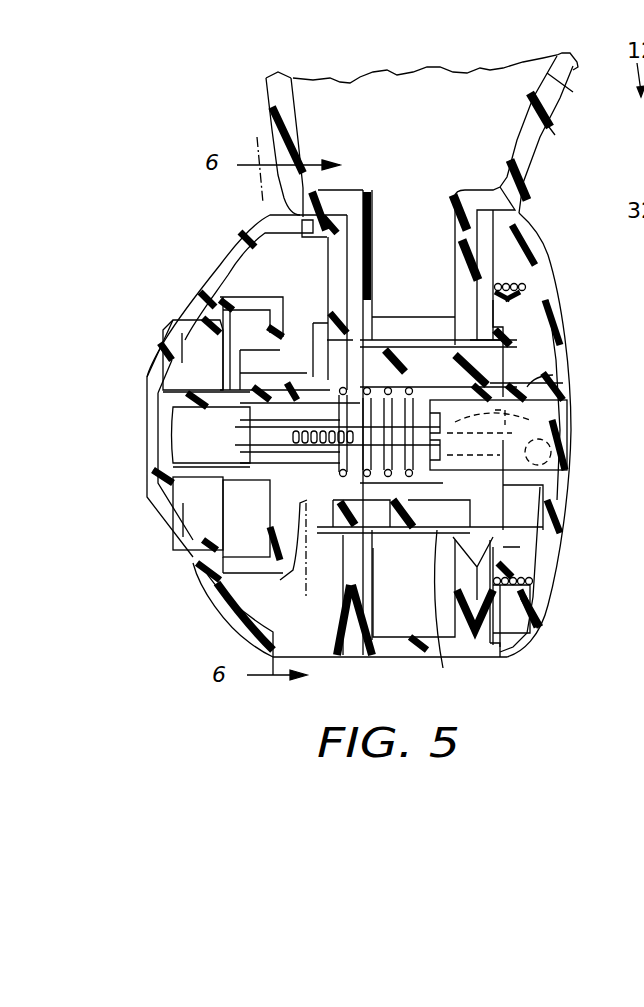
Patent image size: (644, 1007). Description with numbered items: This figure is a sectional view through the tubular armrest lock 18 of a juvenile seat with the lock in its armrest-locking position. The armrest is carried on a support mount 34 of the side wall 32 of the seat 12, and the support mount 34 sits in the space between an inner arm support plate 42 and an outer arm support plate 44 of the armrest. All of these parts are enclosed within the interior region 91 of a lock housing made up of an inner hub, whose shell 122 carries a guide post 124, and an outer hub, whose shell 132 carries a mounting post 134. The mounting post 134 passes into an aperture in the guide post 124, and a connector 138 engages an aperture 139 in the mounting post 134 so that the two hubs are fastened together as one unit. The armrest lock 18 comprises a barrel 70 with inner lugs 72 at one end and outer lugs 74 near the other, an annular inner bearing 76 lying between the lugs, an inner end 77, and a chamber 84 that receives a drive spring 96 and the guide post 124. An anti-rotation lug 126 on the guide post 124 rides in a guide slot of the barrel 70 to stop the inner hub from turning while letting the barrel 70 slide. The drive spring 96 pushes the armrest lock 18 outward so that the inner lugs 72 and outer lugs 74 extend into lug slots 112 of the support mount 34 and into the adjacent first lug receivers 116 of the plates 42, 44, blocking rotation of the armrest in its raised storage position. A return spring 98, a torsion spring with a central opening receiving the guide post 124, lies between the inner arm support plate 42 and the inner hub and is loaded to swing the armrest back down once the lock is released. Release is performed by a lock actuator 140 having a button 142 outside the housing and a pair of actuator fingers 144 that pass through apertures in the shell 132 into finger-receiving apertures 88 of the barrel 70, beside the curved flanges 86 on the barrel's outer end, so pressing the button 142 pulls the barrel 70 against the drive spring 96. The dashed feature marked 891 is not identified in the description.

The seat 12 is at (565, 90).
The side wall 32 is at (268, 103).
The support mount 34 is at (460, 262).
The inner arm support plate 42 is at (487, 258).
The outer arm support plate 44 is at (375, 232).
The barrel 70 is at (432, 373).
The inner lugs 72 is at (503, 347).
The outer lugs 74 is at (420, 347).
The annular inner bearing 76 is at (422, 537).
The inner end of barrel 77 is at (543, 502).
The chamber 84 is at (437, 595).
The axially extending curved flanges 86 is at (297, 477).
The finger-receiving apertures 88 is at (280, 580).
The interior region 91 is at (257, 278).
The drive spring 96 is at (333, 400).
The return spring 98 is at (507, 273).
The lug slots 112 is at (418, 347).
The first lug receivers 116 is at (503, 327).
The shell 122 is at (569, 358).
The guide post 124 is at (553, 375).
The anti-rotation lug 126 is at (568, 455).
The shell 132 is at (217, 603).
The mounting post 134 is at (220, 487).
The connector 138 is at (440, 455).
The aperture 139 is at (247, 433).
The lock actuator 140 is at (123, 443).
The button 142 is at (153, 360).
The actuator fingers 144 is at (187, 407).
The coil 891 is at (507, 413).
The armrest lock 18 is at (507, 362).